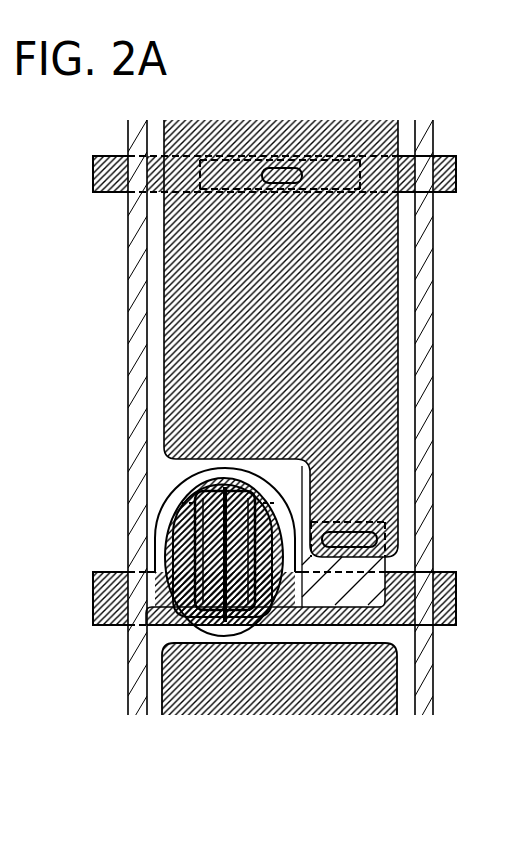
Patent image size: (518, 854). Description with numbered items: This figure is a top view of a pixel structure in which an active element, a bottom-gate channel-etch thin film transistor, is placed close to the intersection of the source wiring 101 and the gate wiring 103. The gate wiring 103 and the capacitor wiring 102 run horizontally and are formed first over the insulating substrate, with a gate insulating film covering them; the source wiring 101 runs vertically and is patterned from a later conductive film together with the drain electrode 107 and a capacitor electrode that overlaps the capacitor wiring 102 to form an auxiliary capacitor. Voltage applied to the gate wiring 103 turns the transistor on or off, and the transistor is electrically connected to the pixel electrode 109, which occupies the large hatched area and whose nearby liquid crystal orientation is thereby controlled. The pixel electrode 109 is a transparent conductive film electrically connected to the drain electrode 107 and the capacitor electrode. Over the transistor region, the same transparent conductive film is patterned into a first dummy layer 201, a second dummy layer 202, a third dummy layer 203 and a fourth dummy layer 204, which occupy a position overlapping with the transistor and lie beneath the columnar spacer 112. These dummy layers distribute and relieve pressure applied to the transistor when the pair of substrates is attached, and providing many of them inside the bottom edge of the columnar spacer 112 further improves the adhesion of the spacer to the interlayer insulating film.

The source wiring 101 is at (137, 658).
The capacitor wiring 102 is at (106, 193).
The gate wiring 103 is at (104, 627).
The drain electrode 107 is at (380, 565).
The pixel electrode 109 is at (193, 357).
The columnar spacer 112 is at (158, 547).
The first dummy layer 201 is at (187, 620).
The second dummy layer 202 is at (200, 620).
The third dummy layer 203 is at (253, 620).
The fourth dummy layer 204 is at (280, 622).